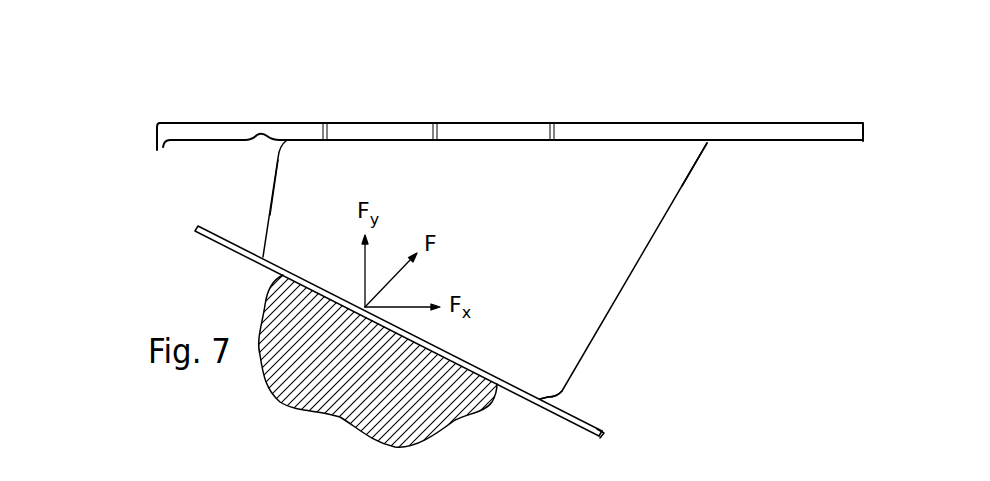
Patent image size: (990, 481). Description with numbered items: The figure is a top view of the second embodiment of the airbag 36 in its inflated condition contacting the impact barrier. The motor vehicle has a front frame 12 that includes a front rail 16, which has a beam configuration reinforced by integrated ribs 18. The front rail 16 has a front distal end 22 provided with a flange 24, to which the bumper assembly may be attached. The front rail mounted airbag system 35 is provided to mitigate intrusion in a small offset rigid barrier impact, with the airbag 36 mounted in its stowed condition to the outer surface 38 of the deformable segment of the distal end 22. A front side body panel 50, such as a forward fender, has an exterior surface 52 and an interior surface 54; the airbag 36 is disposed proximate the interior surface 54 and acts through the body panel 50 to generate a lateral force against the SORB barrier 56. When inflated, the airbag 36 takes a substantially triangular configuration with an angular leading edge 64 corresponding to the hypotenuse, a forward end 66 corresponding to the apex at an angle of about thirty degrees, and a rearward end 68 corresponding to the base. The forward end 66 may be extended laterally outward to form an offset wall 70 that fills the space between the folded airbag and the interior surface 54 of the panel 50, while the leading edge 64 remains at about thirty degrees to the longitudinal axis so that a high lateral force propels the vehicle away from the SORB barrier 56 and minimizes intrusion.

The front frame 12 is at (840, 133).
The front rail 16 is at (643, 130).
The integrated rib 18 is at (260, 128).
The front distal end 22 is at (237, 128).
The flange 24 is at (157, 138).
The outer surface 38 is at (498, 140).
The front rail mounted airbag system 35 is at (437, 269).
The airbag 36 is at (625, 247).
The rearward end 68 is at (682, 190).
The offset wall 70 is at (280, 175).
The forward end 66 is at (278, 200).
The angular leading edge 64 is at (512, 383).
The front side body panel 50 is at (441, 350).
The exterior surface 52 is at (592, 432).
The interior surface 54 is at (605, 433).
The SORB barrier 56 is at (388, 430).